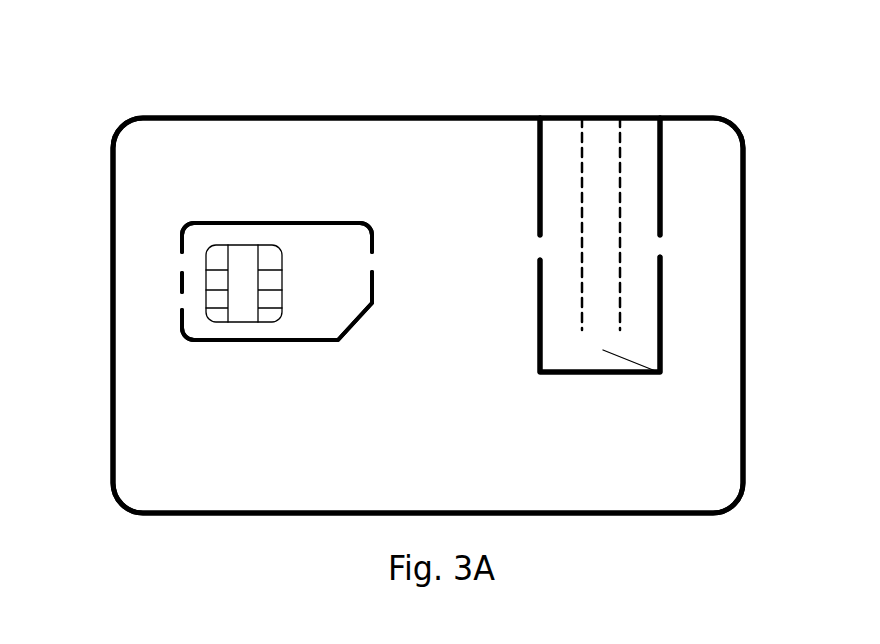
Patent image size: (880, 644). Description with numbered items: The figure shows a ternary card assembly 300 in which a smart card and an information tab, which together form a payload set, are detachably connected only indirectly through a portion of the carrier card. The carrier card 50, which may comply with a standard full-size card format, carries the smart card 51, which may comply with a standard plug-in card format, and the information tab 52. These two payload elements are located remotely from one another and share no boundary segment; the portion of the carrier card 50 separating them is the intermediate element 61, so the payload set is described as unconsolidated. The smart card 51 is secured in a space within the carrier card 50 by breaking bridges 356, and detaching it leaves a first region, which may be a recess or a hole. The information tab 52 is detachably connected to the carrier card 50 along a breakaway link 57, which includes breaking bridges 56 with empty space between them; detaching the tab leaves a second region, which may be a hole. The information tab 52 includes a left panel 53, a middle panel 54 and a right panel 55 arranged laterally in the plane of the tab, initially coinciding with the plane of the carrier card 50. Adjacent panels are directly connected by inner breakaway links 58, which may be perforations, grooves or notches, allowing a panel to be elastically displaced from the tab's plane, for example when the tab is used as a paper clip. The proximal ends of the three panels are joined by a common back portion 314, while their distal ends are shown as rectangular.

The ternary card assembly 300 is at (756, 541).
The carrier card 50 is at (158, 402).
The smart card 51 is at (262, 201).
The breaking bridges 356 is at (372, 264).
The intermediate element 61 is at (428, 310).
The information tab 52 is at (621, 401).
The breakaway link 57 is at (540, 178).
The breaking bridges 56 is at (540, 247).
The inner breakaway links 58 is at (583, 143).
The left panel 53 is at (555, 288).
The middle panel 54 is at (600, 303).
The right panel 55 is at (645, 309).
The common back portion 314 is at (660, 374).